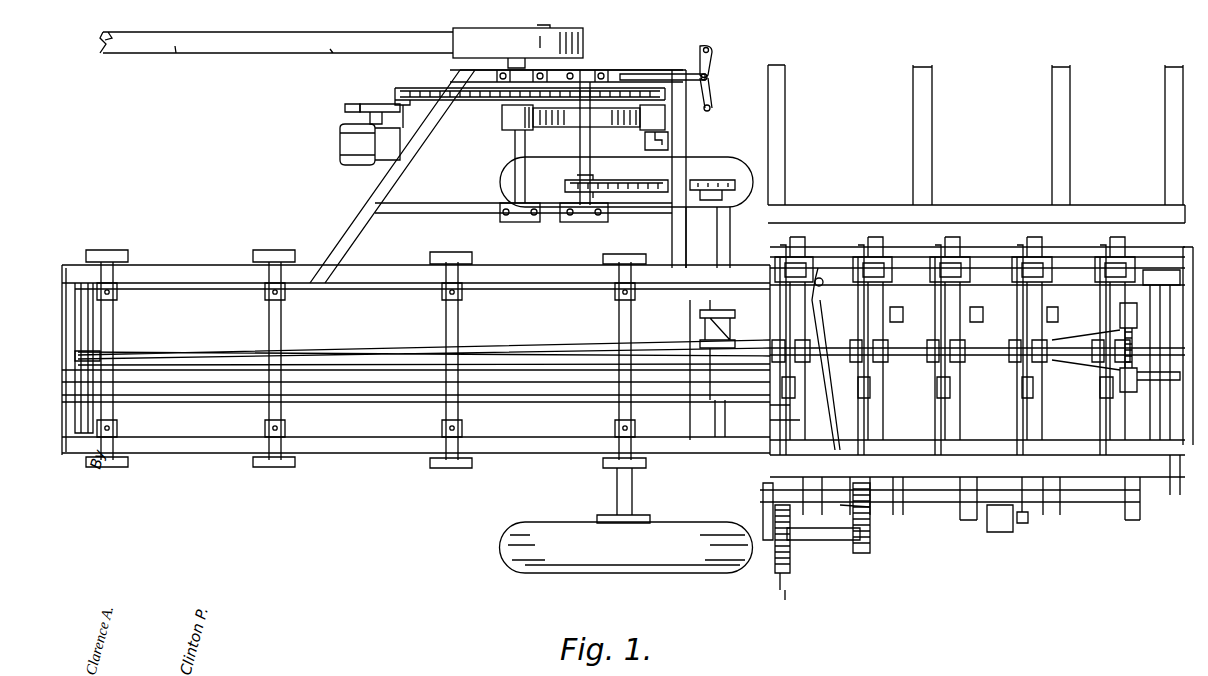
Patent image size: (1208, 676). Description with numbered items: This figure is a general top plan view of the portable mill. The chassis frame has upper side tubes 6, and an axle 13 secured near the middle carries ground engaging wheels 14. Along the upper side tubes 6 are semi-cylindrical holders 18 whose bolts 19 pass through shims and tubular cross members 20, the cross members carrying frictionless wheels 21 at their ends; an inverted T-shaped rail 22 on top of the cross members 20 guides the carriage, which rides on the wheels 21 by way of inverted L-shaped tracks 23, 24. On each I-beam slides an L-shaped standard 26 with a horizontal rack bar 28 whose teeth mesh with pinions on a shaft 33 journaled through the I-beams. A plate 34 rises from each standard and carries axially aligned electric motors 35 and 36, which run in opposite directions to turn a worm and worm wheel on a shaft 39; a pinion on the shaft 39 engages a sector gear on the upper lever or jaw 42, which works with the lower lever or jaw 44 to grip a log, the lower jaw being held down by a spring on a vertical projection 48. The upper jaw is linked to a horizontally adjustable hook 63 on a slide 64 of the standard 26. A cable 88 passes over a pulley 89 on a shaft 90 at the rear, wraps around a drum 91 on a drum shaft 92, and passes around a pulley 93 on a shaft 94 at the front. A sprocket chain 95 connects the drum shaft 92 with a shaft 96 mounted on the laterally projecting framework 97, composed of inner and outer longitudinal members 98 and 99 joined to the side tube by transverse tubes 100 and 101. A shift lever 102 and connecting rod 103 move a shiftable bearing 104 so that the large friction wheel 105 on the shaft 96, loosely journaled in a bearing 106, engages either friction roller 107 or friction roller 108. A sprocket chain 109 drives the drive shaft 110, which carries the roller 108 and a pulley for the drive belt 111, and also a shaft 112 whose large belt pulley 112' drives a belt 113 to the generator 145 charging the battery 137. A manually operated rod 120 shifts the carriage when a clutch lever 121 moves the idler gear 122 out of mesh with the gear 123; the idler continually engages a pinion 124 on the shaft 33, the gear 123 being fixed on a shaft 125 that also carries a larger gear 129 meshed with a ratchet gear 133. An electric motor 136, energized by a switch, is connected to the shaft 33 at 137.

The upper side tube 6 is at (376, 289).
The axle 13 is at (633, 491).
The ground engaging wheel 14 is at (757, 170).
The semi-cylindrical holder 18 is at (285, 292).
The bolt 19 is at (273, 295).
The tubular cross member 20 is at (282, 326).
The frictionless wheel 21 is at (129, 256).
The inverted T-shaped rail 22 is at (549, 393).
The inverted L-shaped track 23 is at (1177, 477).
The inverted L-shaped track 24 is at (1062, 255).
The L-shaped standard 26 is at (1170, 205).
The horizontal rack bar 28 is at (975, 428).
The shaft 33 is at (1100, 500).
The plate 34 is at (954, 356).
The electric motor 35 is at (1140, 378).
The electric motor 36 is at (1137, 318).
The shaft 39 is at (1068, 348).
The upper lever or jaw 42 is at (977, 403).
The lower lever or jaw 44 is at (1105, 450).
The vertical projection 48 is at (975, 310).
The horizontally adjustable hook 63 is at (940, 250).
The slide 64 is at (1020, 222).
The cable 88 is at (541, 346).
The pulley 89 is at (1135, 345).
The shaft 90 is at (1150, 315).
The drum 91 is at (694, 323).
The drum shaft 92 is at (715, 412).
The pulley 93 is at (78, 353).
The shaft 94 is at (85, 318).
The sprocket chain 95 is at (700, 180).
The shaft 96 is at (591, 144).
The laterally projecting framework 97 is at (645, 57).
The inner longitudinal member 98 is at (440, 205).
The outer longitudinal member 99 is at (702, 54).
The transverse tube 100 is at (368, 183).
The transverse tube 101 is at (692, 103).
The shift lever 102 is at (713, 49).
The connecting rod 103 is at (652, 74).
The shiftable bearing 104 is at (586, 70).
The large friction wheel 105 is at (566, 120).
The bearing 106 is at (596, 216).
The friction roller 107 is at (650, 125).
The friction roller 108 is at (502, 116).
The sprocket chain 109 is at (601, 90).
The drive shaft 110 is at (522, 38).
The drive belt 111 is at (336, 54).
The shaft 112 is at (417, 98).
The large belt pulley 112' is at (364, 102).
The belt 113 is at (345, 108).
The manually operated rod 120 is at (770, 488).
The clutch lever 121 is at (790, 420).
The idler gear 122 is at (870, 515).
The gear 123 is at (866, 552).
The pinion 124 is at (875, 505).
The shaft 125 is at (830, 541).
The larger gear 129 is at (772, 558).
The ratchet gear 133 is at (780, 578).
The electric motor 136 is at (1000, 533).
The battery 137 is at (1022, 524).
The generator 145 is at (340, 144).